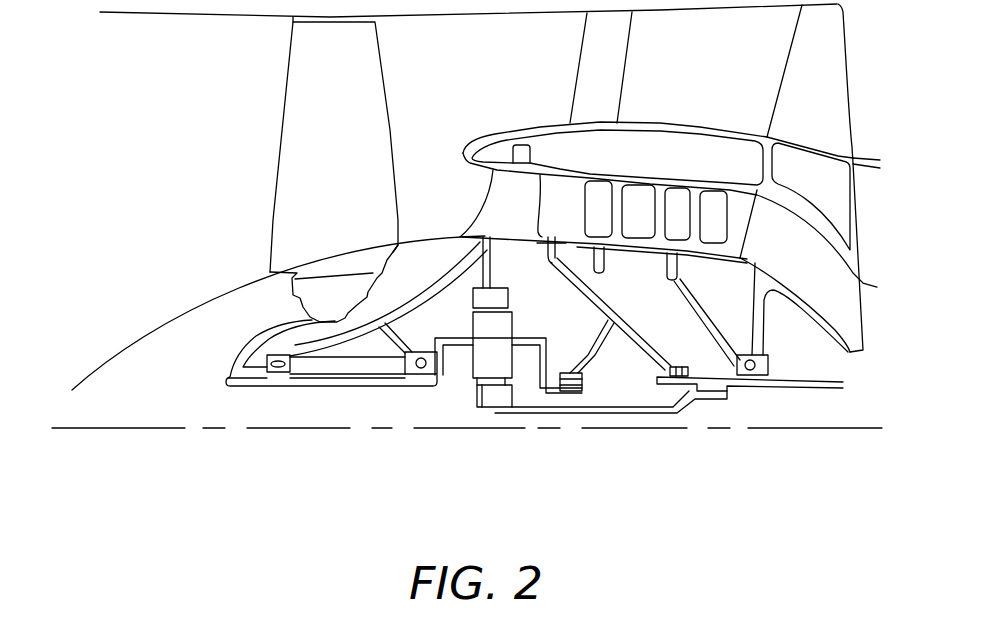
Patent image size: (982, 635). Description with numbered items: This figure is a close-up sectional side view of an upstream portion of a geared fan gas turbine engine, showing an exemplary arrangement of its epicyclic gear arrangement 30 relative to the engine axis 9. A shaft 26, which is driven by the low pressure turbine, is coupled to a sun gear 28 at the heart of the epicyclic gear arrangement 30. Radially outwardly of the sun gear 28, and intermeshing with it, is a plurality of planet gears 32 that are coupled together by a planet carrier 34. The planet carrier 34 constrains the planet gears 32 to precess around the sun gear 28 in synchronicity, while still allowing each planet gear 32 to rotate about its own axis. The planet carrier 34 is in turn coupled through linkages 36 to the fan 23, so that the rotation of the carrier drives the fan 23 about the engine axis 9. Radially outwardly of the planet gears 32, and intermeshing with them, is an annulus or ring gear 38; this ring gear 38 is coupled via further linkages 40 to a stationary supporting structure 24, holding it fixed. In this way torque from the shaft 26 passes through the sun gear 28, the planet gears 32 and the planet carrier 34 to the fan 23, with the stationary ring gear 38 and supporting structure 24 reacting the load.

The engine axis 9 is at (163, 430).
The fan 23 is at (310, 145).
The stationary supporting structure 24 is at (494, 195).
The shaft 26 is at (617, 412).
The sun gear 28 is at (494, 398).
The epicyclic gear arrangement 30 is at (482, 368).
The planet gears 32 is at (482, 378).
The planet carrier 34 is at (548, 364).
The linkages 36 is at (449, 372).
The ring gear 38 is at (498, 298).
The linkages 40 is at (495, 268).